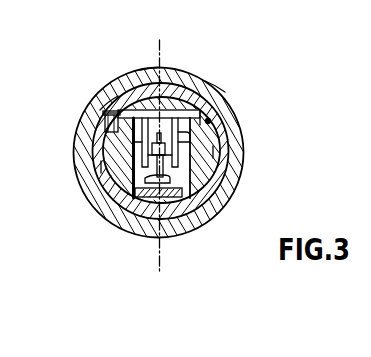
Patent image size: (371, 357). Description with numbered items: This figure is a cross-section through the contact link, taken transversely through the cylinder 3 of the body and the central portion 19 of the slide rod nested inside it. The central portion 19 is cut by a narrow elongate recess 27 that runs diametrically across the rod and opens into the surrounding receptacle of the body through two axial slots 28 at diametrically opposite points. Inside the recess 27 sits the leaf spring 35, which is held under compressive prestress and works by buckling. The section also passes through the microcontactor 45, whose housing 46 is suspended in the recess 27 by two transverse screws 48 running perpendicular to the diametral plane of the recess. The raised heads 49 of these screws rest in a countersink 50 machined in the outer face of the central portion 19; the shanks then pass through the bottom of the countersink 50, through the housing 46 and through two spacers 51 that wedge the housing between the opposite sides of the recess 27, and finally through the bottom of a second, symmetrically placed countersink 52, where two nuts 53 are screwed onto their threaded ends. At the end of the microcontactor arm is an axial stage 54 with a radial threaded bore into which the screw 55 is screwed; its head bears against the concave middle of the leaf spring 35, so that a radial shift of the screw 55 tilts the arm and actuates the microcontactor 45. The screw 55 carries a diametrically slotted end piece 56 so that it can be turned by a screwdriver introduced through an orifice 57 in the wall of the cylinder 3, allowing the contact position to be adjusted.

The cylinder 3 is at (202, 222).
The central portion 19 is at (95, 200).
The recess 27 is at (218, 203).
The axial slots 28 is at (142, 120).
The leaf spring 35 is at (173, 197).
The microcontactor 45 is at (169, 96).
The housing 46 is at (192, 118).
The transverse screws 48 is at (218, 83).
The raised heads 49 is at (209, 120).
The countersink 50 is at (210, 130).
The spacers 51 is at (213, 152).
The countersink 52 is at (104, 124).
The nuts 53 is at (122, 100).
The axial stage 54 is at (178, 178).
The screw 55 is at (136, 222).
The slotted end piece 56 is at (115, 217).
The orifice 57 is at (147, 84).